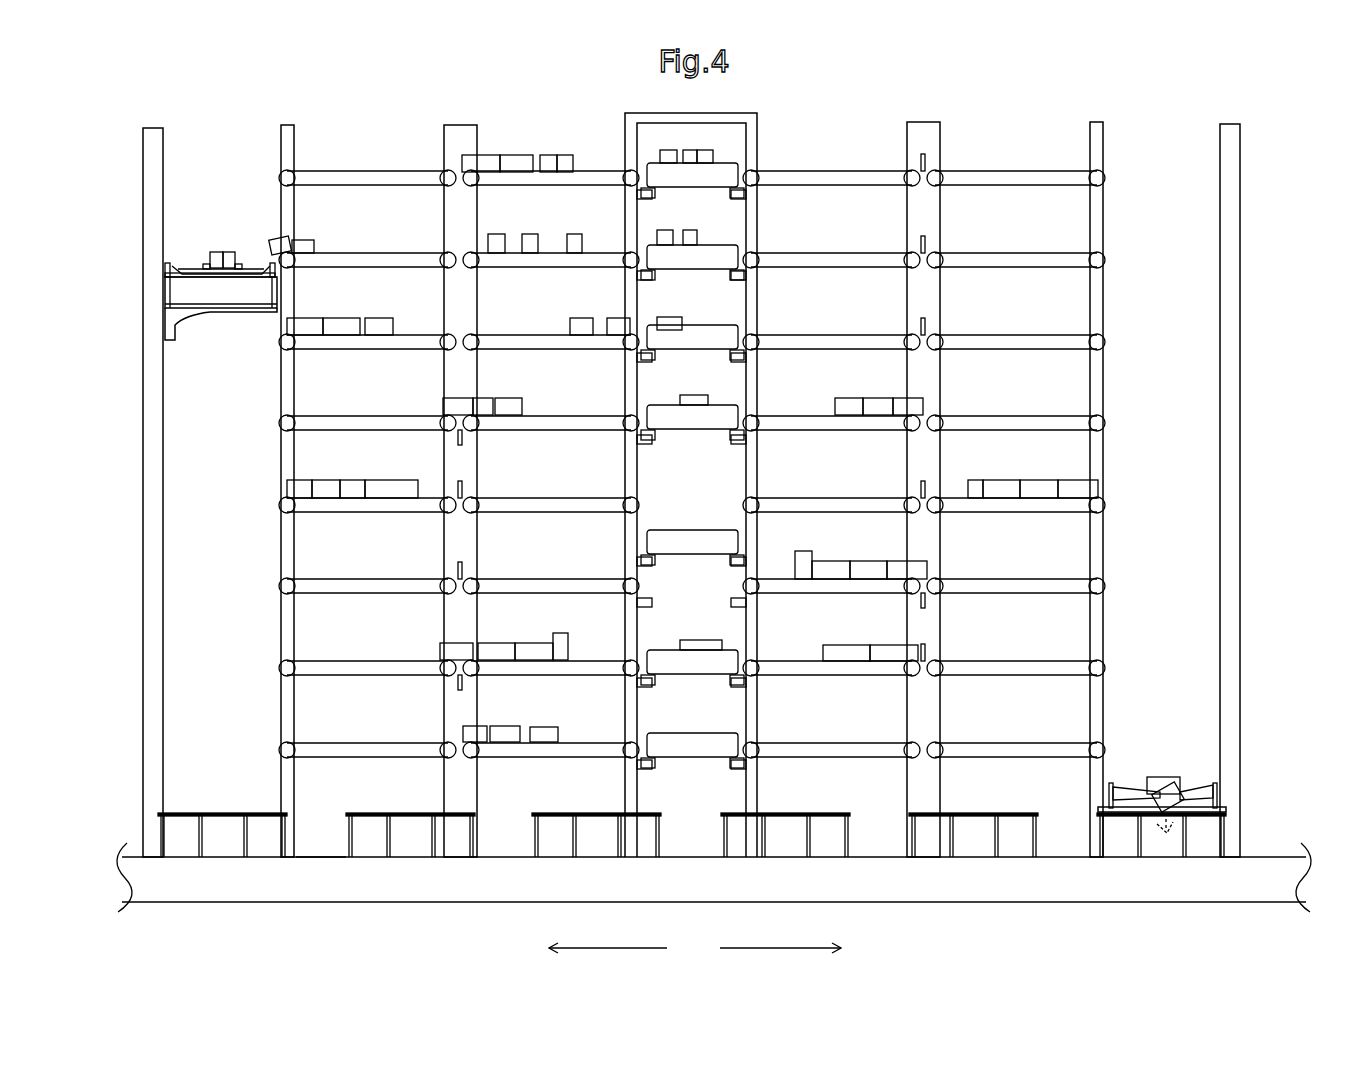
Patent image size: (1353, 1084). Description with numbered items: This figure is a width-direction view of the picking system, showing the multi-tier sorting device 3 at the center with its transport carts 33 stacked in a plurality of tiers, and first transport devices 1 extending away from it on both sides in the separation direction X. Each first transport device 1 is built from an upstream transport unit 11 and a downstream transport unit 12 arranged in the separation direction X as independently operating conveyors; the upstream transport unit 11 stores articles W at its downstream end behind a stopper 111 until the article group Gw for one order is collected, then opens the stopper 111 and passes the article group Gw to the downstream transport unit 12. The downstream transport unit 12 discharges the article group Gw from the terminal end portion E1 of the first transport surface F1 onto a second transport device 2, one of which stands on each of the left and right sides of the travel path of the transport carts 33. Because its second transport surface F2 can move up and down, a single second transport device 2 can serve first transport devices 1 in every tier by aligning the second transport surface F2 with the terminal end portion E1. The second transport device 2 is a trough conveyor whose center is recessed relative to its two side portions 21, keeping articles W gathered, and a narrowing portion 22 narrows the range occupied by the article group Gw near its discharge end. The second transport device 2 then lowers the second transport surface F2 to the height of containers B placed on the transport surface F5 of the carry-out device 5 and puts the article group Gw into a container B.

The first transport device 1 is at (1073, 152).
The second transport device 2 is at (130, 386).
The multi-tier sorting device 3 is at (735, 109).
The carry-out device 5 is at (885, 848).
The upstream transport unit 11 is at (798, 168).
The downstream transport unit 12 is at (1003, 170).
The stopper 111 is at (921, 158).
The side portion 21 is at (183, 262).
The narrowing portion 22 is at (205, 265).
The transport cart 33 is at (697, 335).
The container B is at (218, 815).
The terminal end portion E1 is at (1112, 178).
The first transport surface F1 is at (413, 168).
The second transport surface F2 is at (188, 256).
The transport surface F5 is at (318, 850).
The article group Gw is at (230, 246).
The article W is at (690, 158).
The separation direction X is at (695, 933).